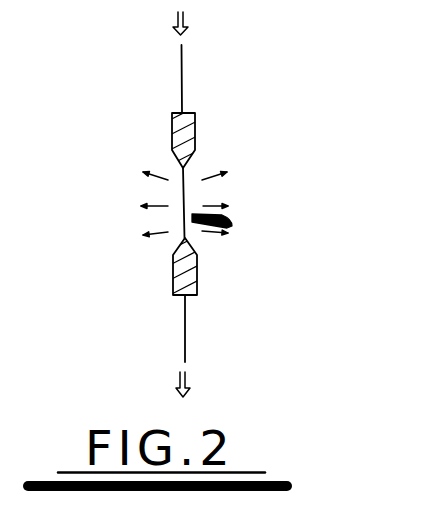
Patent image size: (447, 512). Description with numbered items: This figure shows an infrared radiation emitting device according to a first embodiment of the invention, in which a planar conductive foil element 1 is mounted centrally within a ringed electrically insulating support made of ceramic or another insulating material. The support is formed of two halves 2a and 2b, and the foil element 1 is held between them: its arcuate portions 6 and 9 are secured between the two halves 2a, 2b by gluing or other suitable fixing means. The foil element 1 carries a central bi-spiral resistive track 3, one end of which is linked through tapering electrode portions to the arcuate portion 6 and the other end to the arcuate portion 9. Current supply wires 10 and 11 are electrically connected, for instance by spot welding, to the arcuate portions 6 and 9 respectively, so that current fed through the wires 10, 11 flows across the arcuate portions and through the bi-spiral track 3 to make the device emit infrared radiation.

The conductive foil element 1 is at (233, 226).
The half of the support 2a is at (196, 116).
The half of the support 2b is at (170, 122).
The bi-spiral resistive track 3 is at (186, 189).
The arcuate portion 6 is at (198, 260).
The arcuate portion 9 is at (172, 138).
The current supply wire 10 is at (190, 363).
The current supply wire 11 is at (182, 80).